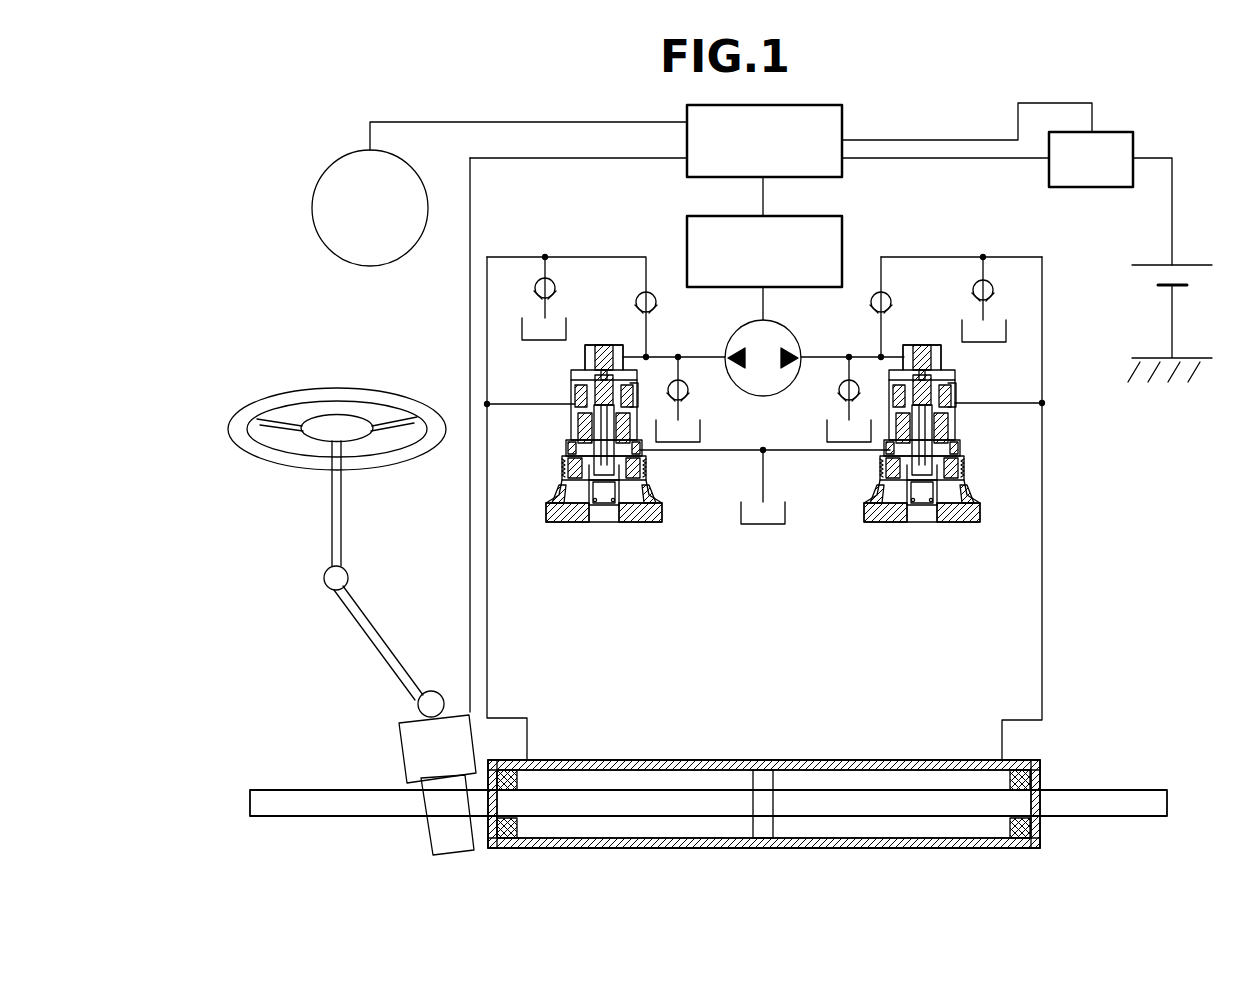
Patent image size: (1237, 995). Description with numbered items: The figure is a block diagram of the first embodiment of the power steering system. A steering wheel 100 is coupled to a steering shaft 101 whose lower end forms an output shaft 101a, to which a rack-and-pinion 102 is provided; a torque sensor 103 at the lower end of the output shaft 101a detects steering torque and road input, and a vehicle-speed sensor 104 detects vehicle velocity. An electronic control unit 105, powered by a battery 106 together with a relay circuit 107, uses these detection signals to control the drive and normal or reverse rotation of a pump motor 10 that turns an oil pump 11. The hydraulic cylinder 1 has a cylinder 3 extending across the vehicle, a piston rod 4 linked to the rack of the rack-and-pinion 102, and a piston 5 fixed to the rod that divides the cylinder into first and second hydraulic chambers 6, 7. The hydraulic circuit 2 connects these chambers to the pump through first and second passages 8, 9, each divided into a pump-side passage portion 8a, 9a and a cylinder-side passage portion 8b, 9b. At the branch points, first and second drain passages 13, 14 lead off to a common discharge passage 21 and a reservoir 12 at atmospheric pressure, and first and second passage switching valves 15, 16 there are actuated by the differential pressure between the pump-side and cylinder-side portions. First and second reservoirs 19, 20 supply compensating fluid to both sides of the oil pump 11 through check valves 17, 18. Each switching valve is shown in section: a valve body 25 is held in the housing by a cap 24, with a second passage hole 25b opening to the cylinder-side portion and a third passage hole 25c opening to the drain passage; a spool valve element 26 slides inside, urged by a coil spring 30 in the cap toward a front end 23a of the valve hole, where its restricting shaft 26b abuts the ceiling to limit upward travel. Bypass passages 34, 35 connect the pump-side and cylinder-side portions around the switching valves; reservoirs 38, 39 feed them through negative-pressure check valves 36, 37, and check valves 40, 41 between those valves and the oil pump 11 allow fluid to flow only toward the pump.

The hydraulic cylinder 1 is at (708, 792).
The hydraulic circuit 2 is at (773, 475).
The cylinder 3 is at (938, 760).
The piston rod 4 is at (808, 796).
The piston 5 is at (762, 770).
The first hydraulic chamber 6 is at (688, 778).
The second hydraulic chamber 7 is at (878, 780).
The first passage 8 is at (489, 615).
The pump-side passage portion 8a is at (702, 356).
The cylinder-side passage portion 8b is at (489, 560).
The second passage 9 is at (1040, 618).
The pump-side passage portion 9a is at (834, 356).
The cylinder-side passage portion 9b is at (1040, 570).
The pump motor 10 is at (844, 238).
The oil pump 11 is at (788, 332).
The reservoir 12 is at (786, 516).
The first drain passage 13 is at (707, 452).
The second drain passage 14 is at (848, 452).
The first passage switching valve 15 is at (764, 432).
The second passage switching valve 16 is at (922, 548).
The check valve 17 is at (686, 396).
The check valve 18 is at (840, 396).
The first reservoir 19 is at (826, 430).
The second reservoir 20 is at (702, 432).
The discharge passage 21 is at (765, 478).
The front end 23a is at (590, 343).
The cap 24 is at (640, 523).
The valve body 25 is at (575, 420).
The second passage hole 25b is at (956, 395).
The third passage hole 25c is at (958, 464).
The spool valve element 26 is at (572, 450).
The restricting shaft 26b is at (584, 358).
The coil spring 30 is at (590, 522).
The bypass passage 34 is at (600, 256).
The bypass passage 35 is at (958, 256).
The negative-pressure check valve 36 is at (538, 278).
The negative-pressure check valve 37 is at (991, 288).
The reservoir 38 is at (521, 320).
The reservoir 39 is at (962, 330).
The check valve 40 is at (648, 291).
The check valve 41 is at (876, 291).
The steering wheel 100 is at (285, 392).
The steering shaft 101 is at (330, 510).
The output shaft 101a is at (385, 640).
The rack-and-pinion 102 is at (425, 832).
The torque sensor 103 is at (398, 758).
The vehicle-speed sensor 104 is at (316, 185).
The electronic control unit 105 is at (845, 124).
The battery 106 is at (1140, 263).
The relay circuit 107 is at (1108, 132).